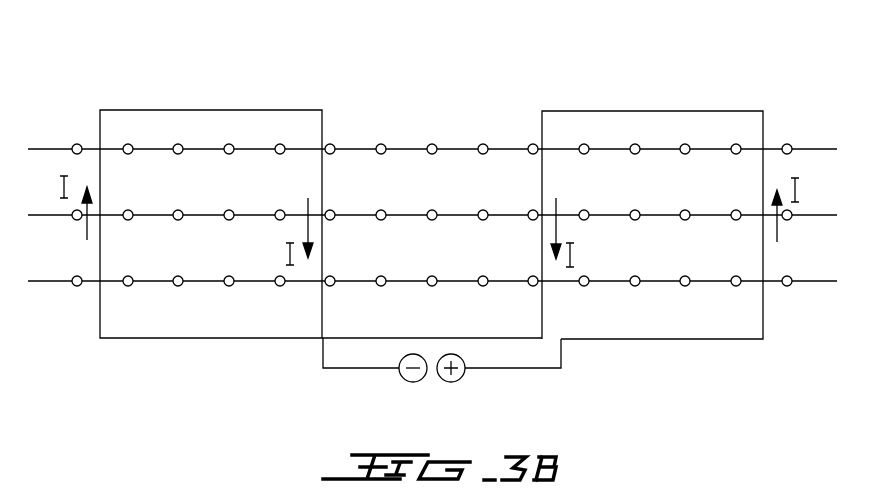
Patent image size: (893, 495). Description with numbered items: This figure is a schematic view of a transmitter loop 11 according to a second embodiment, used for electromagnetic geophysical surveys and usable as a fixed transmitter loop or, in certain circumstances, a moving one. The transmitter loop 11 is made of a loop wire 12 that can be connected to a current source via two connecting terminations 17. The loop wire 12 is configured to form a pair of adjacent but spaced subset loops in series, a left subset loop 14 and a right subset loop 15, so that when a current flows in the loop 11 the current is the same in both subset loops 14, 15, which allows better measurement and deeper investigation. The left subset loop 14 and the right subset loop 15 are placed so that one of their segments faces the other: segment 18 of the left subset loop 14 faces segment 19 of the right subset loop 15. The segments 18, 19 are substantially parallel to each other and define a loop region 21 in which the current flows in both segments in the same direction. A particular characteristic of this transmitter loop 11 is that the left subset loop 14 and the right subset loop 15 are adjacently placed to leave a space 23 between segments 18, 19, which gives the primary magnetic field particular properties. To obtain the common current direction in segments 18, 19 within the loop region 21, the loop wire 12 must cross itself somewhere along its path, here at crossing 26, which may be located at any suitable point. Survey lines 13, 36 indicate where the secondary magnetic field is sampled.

The transmitter loop 11 is at (780, 57).
The loop wire 12 is at (210, 110).
The survey line 13 is at (822, 148).
The left subset loop 14 is at (209, 322).
The right subset loop 15 is at (656, 327).
The connecting terminations 17 is at (413, 383).
The segment 18 is at (322, 182).
The segment 19 is at (542, 182).
The loop region 21 is at (433, 127).
The space 23 is at (498, 250).
The crossing 26 is at (318, 346).
The survey line 36 is at (822, 214).